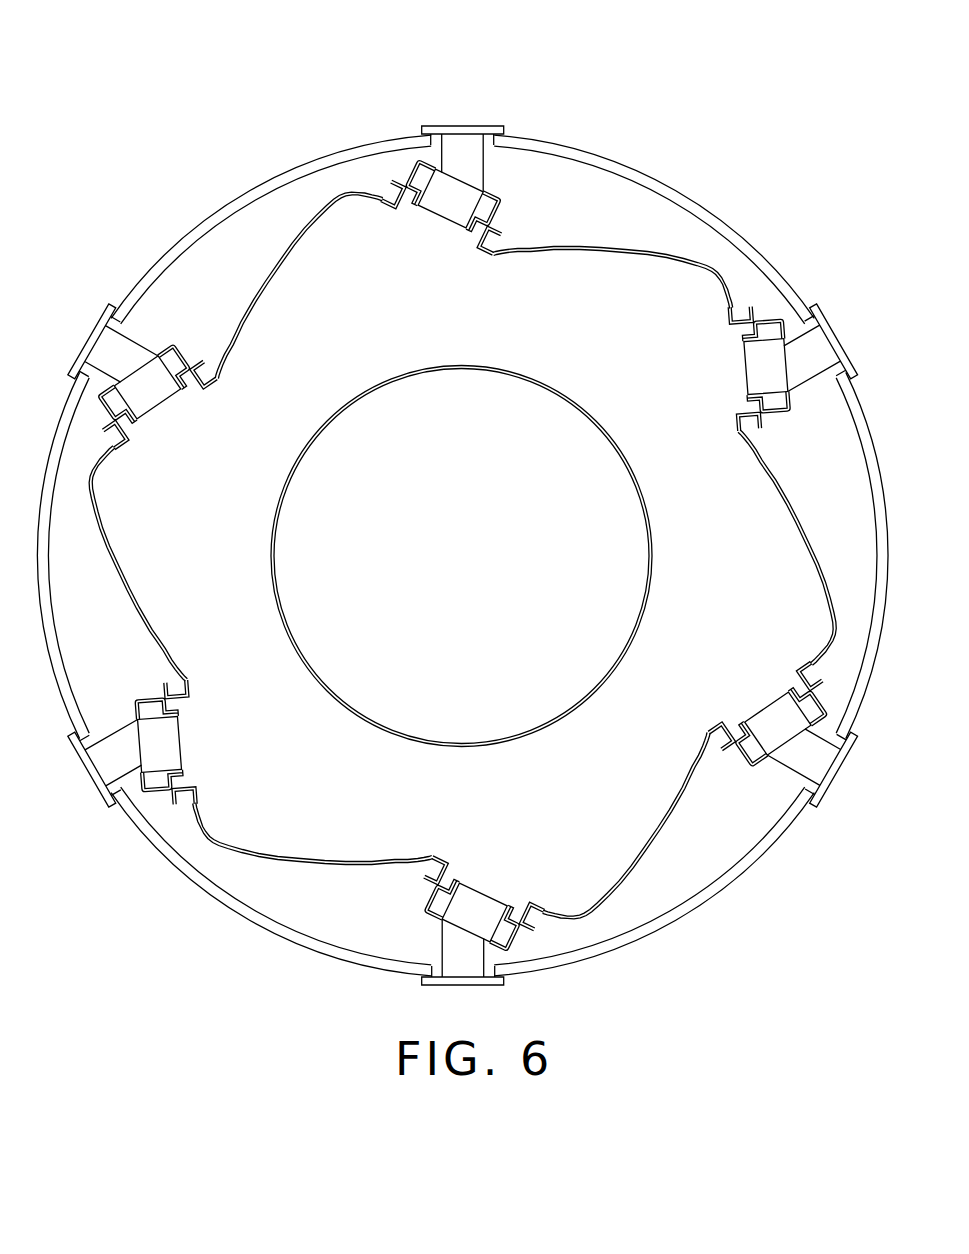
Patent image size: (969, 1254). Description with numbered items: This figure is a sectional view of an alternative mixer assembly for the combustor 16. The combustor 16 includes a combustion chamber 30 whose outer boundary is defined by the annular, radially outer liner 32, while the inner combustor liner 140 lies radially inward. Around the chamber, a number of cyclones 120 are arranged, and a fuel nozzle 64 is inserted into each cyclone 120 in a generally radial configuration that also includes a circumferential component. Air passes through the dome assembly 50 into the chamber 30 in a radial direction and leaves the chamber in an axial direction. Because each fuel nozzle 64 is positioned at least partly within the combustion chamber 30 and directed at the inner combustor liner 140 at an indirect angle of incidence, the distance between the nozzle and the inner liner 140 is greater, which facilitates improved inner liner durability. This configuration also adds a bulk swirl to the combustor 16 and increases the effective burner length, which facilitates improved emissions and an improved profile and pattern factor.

The combustor 16 is at (409, 77).
The combustion chamber 30 is at (352, 793).
The radially outer liner 32 is at (686, 196).
The dome assembly 50 is at (806, 516).
The fuel nozzle 64 is at (428, 214).
The cyclone 120 is at (503, 200).
The inner combustor liner 140 is at (518, 742).